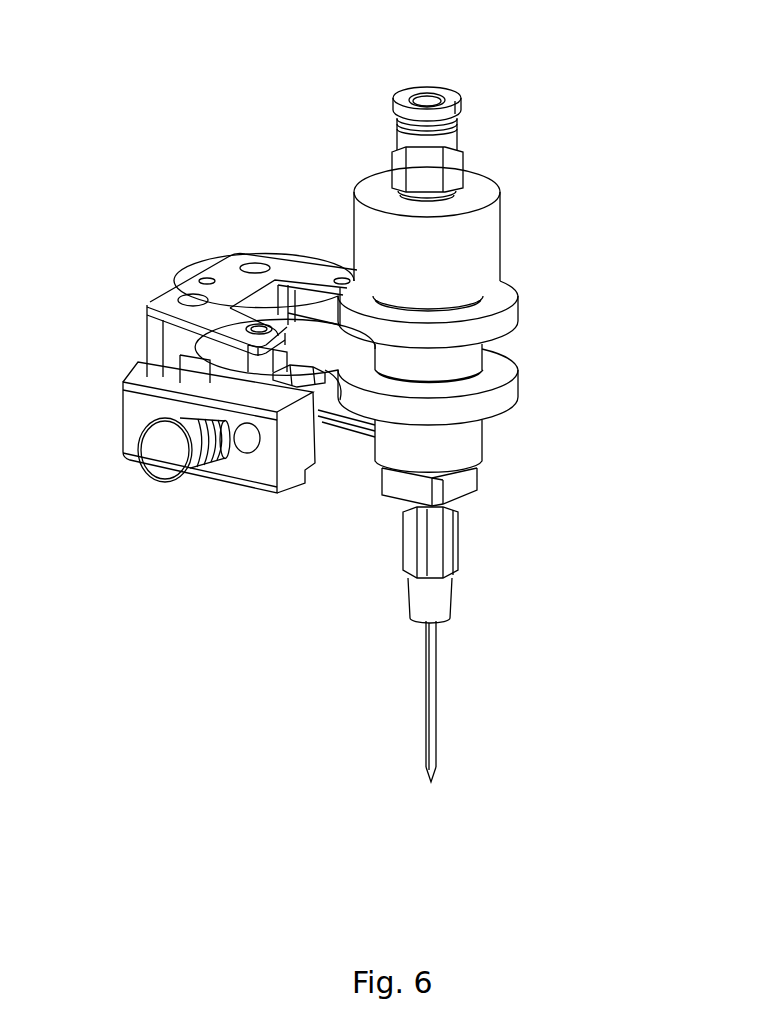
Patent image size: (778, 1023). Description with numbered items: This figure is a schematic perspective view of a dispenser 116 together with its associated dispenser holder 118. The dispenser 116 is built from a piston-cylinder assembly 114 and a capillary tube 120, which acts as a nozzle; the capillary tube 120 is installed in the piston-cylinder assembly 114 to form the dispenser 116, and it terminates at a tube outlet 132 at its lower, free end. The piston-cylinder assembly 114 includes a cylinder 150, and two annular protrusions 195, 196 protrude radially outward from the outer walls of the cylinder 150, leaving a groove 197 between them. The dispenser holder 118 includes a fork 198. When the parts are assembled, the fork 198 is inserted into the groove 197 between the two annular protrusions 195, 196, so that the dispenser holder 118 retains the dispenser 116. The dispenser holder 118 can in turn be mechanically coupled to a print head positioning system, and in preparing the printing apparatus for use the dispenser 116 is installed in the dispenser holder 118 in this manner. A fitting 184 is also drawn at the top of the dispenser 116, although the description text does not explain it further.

The dispenser 116 is at (596, 98).
The piston-cylinder assembly 114 is at (630, 259).
The dispenser holder 118 is at (163, 275).
The fork 198 is at (248, 324).
The fluid fitting 184 is at (424, 76).
The annular protrusion 195 is at (520, 312).
The groove 197 is at (507, 347).
The annular protrusion 196 is at (522, 382).
The cylinder 150 is at (487, 440).
The capillary tube 120 is at (388, 621).
The tube outlet 132 is at (420, 783).